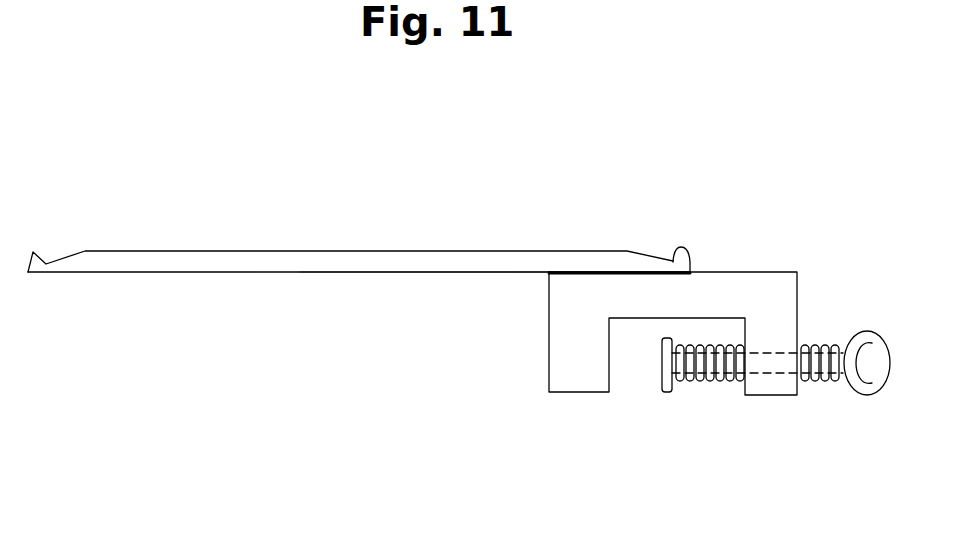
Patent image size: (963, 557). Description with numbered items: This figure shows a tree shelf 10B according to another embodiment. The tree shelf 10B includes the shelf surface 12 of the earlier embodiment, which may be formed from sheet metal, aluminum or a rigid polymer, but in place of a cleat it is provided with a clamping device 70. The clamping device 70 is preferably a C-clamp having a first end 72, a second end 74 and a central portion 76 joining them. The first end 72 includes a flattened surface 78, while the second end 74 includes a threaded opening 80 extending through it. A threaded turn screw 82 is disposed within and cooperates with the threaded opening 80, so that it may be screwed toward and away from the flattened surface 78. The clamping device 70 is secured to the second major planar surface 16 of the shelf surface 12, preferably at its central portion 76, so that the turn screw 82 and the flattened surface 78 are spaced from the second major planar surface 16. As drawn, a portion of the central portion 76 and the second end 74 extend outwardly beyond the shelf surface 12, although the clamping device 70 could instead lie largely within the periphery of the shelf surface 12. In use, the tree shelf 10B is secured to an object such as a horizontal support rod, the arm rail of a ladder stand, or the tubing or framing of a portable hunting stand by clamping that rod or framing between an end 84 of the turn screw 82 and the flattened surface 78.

The tree shelf 10B is at (187, 167).
The shelf surface 12 is at (449, 219).
The second major planar surface 16 is at (438, 274).
The clamping device 70 is at (808, 258).
The first end 72 is at (563, 376).
The second end 74 is at (760, 380).
The central portion 76 is at (698, 290).
The flattened surface 78 is at (620, 355).
The threaded opening 80 is at (782, 360).
The threaded turn screw 82 is at (712, 386).
The end of turn screw 84 is at (651, 358).